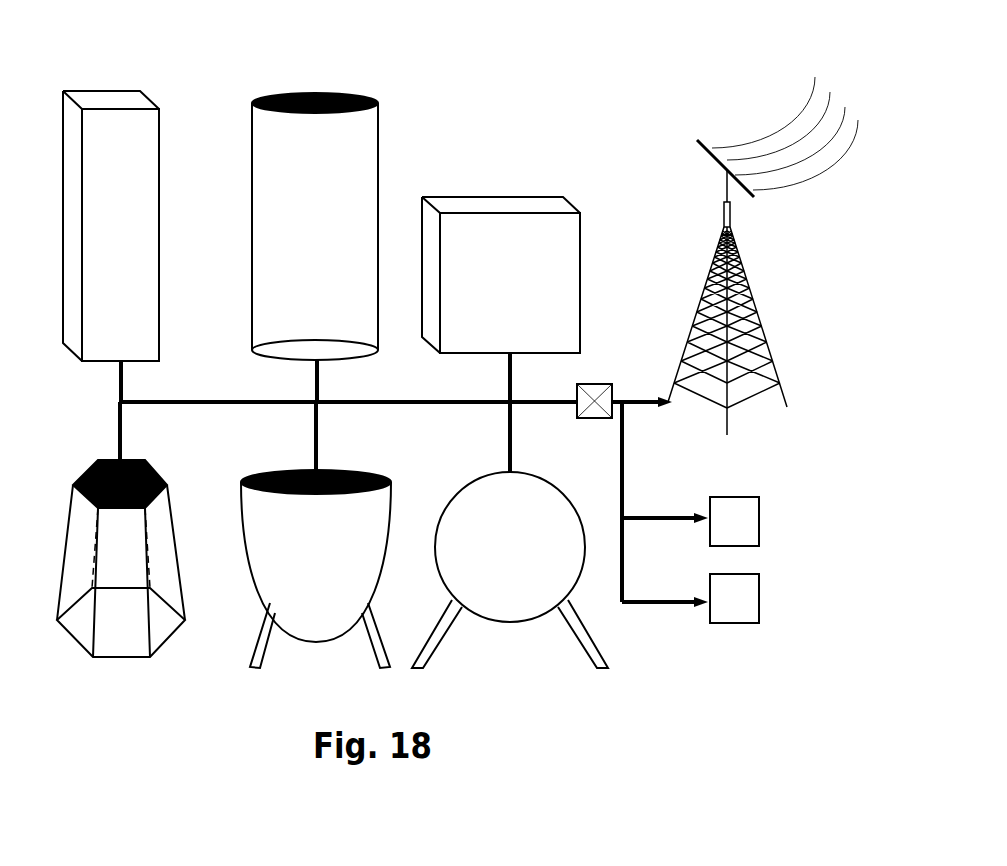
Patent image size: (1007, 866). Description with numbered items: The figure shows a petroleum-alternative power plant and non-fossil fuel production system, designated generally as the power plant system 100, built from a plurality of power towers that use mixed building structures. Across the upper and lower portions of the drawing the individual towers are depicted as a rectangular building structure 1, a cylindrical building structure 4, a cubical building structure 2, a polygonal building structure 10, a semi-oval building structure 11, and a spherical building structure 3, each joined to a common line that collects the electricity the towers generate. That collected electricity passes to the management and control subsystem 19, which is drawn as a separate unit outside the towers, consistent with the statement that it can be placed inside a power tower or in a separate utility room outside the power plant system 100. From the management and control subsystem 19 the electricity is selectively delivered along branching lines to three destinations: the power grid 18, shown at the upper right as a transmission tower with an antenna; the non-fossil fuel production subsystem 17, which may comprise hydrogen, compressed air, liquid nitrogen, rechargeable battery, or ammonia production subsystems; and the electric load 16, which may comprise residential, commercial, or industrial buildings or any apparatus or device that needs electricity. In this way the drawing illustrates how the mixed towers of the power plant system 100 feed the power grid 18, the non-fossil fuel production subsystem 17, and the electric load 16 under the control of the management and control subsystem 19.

The power plant system 100 is at (430, 132).
The rectangular building structure 1 is at (168, 228).
The cylindrical building structure 4 is at (241, 164).
The cubical building structure 2 is at (462, 200).
The management and control subsystem 19 is at (598, 370).
The power grid 18 is at (760, 281).
The polygonal building structure 10 is at (165, 456).
The semi-oval building structure 11 is at (385, 466).
The spherical building structure 3 is at (480, 465).
The non-fossil fuel production subsystem 17 is at (770, 515).
The electric load 16 is at (770, 592).